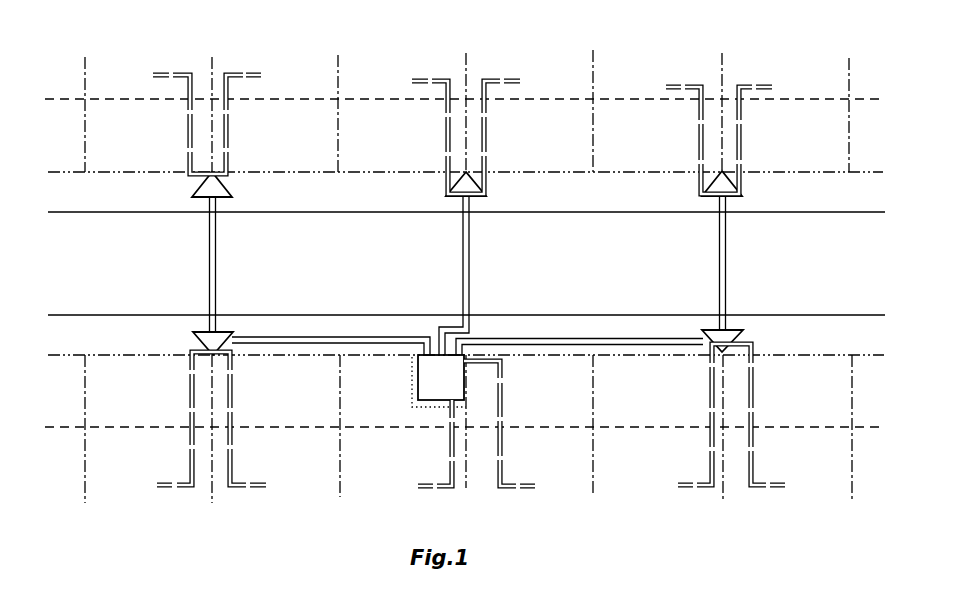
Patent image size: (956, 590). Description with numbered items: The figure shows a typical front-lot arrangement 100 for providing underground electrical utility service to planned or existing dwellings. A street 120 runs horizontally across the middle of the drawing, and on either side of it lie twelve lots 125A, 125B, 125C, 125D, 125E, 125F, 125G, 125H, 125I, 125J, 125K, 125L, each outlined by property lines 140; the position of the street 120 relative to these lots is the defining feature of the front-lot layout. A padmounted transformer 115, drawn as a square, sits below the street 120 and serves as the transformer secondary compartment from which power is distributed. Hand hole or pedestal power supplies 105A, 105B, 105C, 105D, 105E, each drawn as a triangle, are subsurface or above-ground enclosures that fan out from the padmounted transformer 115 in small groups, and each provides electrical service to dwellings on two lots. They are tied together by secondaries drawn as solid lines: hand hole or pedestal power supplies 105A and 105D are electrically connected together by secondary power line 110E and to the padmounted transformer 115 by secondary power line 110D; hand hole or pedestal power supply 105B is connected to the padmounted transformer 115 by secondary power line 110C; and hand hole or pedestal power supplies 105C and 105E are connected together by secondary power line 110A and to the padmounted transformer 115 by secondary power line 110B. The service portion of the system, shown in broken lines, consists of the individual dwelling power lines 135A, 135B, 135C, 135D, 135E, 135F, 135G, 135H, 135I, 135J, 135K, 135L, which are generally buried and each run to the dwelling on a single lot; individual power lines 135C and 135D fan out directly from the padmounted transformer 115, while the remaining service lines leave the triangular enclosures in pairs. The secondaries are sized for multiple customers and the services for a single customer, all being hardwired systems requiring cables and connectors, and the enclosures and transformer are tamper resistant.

The front-lot arrangement 100 is at (150, 260).
The hand hole or pedestal power supply 105A is at (196, 186).
The hand hole or pedestal power supply 105B is at (477, 182).
The hand hole or pedestal power supply 105C is at (736, 181).
The hand hole or pedestal power supply 105D is at (194, 336).
The hand hole or pedestal power supply 105E is at (706, 340).
The secondary power line 110A is at (730, 240).
The secondary power line 110B is at (586, 335).
The secondary power line 110C is at (474, 257).
The secondary power line 110D is at (416, 337).
The secondary power line 110E is at (219, 266).
The padmounted transformer 115 is at (417, 382).
The street 120 is at (661, 271).
The lot 125A is at (164, 472).
The lot 125B is at (314, 462).
The lot 125C is at (424, 478).
The lot 125D is at (578, 464).
The lot 125E is at (680, 462).
The lot 125F is at (832, 464).
The lot 125G is at (158, 152).
The lot 125H is at (310, 162).
The lot 125I is at (417, 155).
The lot 125J is at (570, 154).
The lot 125K is at (676, 145).
The lot 125L is at (816, 147).
The individual dwelling power line 135A is at (190, 485).
The individual dwelling power line 135B is at (243, 485).
The individual dwelling power line 135C is at (441, 487).
The individual dwelling power line 135D is at (504, 487).
The individual dwelling power line 135E is at (706, 481).
The individual dwelling power line 135F is at (752, 481).
The individual dwelling power line 135G is at (188, 72).
The individual dwelling power line 135H is at (227, 72).
The individual dwelling power line 135I is at (447, 80).
The individual dwelling power line 135J is at (484, 80).
The individual dwelling power line 135K is at (701, 86).
The individual dwelling power line 135L is at (740, 86).
The property lines 140 is at (53, 178).